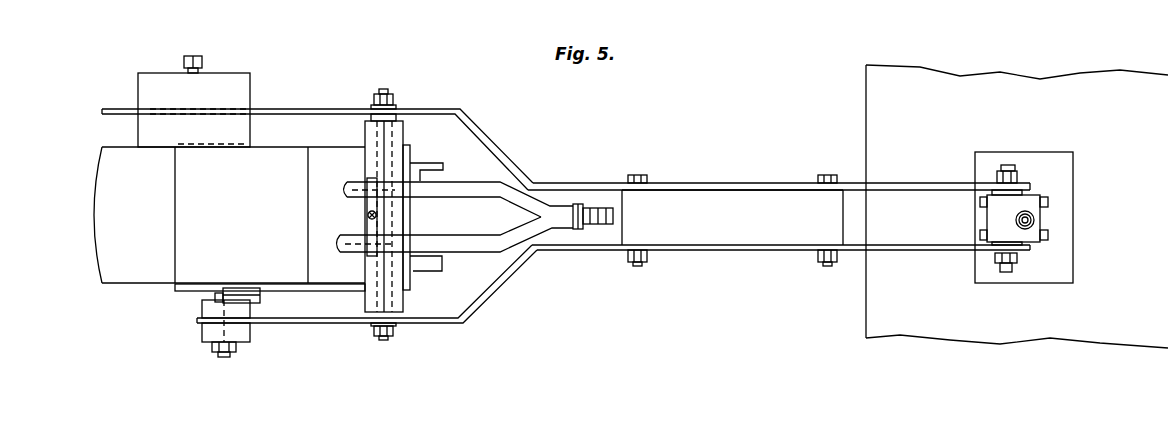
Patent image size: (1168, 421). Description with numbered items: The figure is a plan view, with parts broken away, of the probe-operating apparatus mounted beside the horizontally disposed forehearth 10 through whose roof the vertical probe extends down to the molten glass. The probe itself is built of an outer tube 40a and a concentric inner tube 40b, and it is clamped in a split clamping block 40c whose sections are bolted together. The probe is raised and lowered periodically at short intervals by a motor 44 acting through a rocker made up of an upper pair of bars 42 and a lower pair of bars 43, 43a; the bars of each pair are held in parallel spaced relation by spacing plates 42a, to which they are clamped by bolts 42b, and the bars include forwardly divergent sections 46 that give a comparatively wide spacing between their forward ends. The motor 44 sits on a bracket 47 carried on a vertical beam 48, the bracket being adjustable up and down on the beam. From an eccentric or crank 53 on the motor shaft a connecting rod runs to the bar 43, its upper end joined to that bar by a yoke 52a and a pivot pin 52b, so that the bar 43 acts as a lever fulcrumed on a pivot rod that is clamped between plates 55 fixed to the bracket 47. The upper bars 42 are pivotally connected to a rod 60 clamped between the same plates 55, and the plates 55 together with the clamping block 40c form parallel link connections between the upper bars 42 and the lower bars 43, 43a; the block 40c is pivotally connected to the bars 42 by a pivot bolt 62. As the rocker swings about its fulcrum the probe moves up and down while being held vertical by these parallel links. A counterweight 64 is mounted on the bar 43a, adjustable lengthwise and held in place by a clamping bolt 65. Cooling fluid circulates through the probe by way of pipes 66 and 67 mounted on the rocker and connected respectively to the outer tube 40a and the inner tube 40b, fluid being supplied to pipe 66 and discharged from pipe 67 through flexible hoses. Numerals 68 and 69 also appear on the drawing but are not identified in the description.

The forehearth 10 is at (1142, 142).
The outer tube 40a is at (1040, 212).
The inner tube 40b is at (1040, 221).
The split clamping block 40c is at (997, 216).
The upper pair of bars 42 is at (614, 163).
The spacing plates 42a is at (791, 166).
The bolts 42b is at (826, 267).
The lower bar 43 is at (339, 320).
The lower bar 43a is at (327, 93).
The motor 44 is at (248, 216).
The forwardly divergent sections 46 is at (511, 163).
The bracket 47 is at (187, 287).
The vertical beam 48 is at (418, 266).
The yoke 52a is at (247, 330).
The pivot pin 52b is at (223, 357).
The eccentric or crank 53 is at (244, 286).
The plates 55 is at (396, 300).
The rod 60 is at (395, 338).
The pivot bolt 62 is at (1005, 273).
The counterweight 64 is at (243, 90).
The clamping bolt 65 is at (203, 66).
The pipe 66 is at (613, 220).
The pipe 67 is at (593, 212).
The lower conduit 68 is at (482, 218).
The upper conduit 69 is at (480, 164).